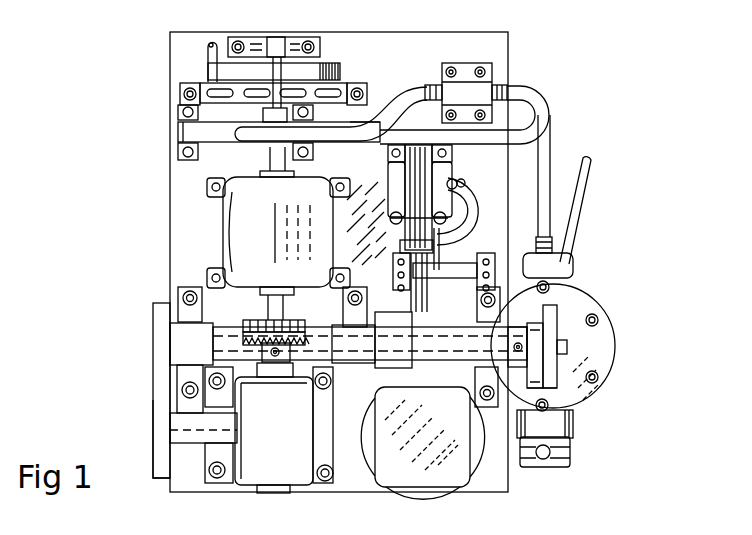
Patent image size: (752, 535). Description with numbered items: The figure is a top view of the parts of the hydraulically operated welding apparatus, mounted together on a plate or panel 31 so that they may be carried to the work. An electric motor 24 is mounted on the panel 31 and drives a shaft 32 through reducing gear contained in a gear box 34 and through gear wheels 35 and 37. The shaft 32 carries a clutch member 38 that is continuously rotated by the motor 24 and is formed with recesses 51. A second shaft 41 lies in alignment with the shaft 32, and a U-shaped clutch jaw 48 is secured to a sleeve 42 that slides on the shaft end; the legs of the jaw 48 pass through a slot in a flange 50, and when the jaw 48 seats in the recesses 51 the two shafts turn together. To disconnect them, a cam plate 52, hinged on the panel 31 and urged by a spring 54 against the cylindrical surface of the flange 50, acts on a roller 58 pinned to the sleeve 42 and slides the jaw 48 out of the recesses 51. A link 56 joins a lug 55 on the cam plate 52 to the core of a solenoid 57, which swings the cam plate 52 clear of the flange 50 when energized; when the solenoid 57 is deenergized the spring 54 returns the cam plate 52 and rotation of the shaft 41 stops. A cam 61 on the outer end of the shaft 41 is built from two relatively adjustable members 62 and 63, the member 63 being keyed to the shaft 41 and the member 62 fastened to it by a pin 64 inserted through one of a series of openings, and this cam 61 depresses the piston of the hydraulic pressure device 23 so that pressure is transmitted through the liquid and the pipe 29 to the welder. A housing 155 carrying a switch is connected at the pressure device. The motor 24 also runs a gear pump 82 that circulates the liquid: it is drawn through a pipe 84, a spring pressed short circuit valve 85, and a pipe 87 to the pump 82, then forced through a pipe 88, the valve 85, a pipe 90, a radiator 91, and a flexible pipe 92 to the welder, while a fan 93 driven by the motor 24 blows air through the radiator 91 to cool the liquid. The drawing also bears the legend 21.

The rotor 21 is at (422, 461).
The hydraulic pressure device 23 is at (563, 398).
The electric motor 24 is at (247, 220).
The pipe 29 is at (581, 200).
The panel 31 is at (495, 477).
The shaft 32 is at (222, 337).
The gear box 34 is at (258, 467).
The gear wheel 35 is at (160, 408).
The gear wheel 37 is at (153, 347).
The clutch member 38 is at (350, 322).
The second shaft 41 is at (568, 337).
The sleeve 42 is at (420, 342).
The U-shaped clutch jaw 48 is at (335, 382).
The flange 50 is at (503, 330).
The recesses 51 is at (403, 318).
The cam plate 52 is at (473, 258).
The spring 54 is at (441, 265).
The lug 55 is at (408, 300).
The link 56 is at (387, 211).
The solenoid 57 is at (437, 173).
The roller 58 is at (486, 290).
The cam 61 is at (535, 338).
The cam member 62 is at (550, 340).
The cam member 63 is at (545, 378).
The pin 64 is at (567, 349).
The gear pump 82 is at (200, 128).
The pipe 84 is at (551, 140).
The short circuit valve 85 is at (470, 90).
The pipe 87 is at (401, 108).
The pipe 88 is at (533, 112).
The pipe 90 is at (360, 126).
The radiator 91 is at (345, 88).
The flexible pipe 92 is at (208, 52).
The fan 93 is at (310, 70).
The housing 155 is at (560, 452).